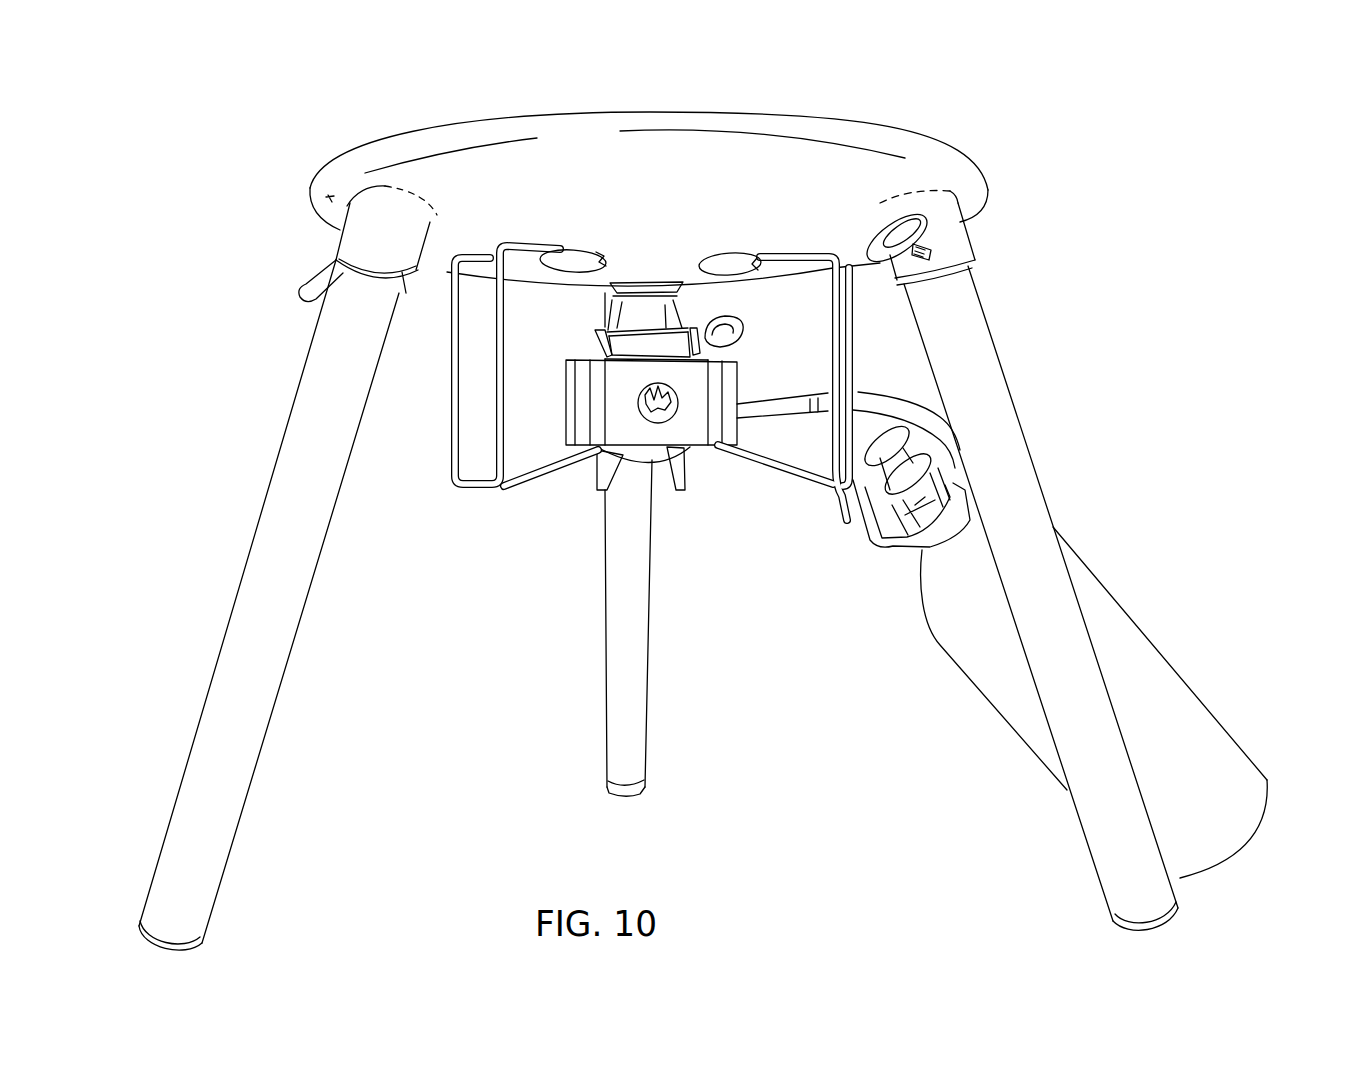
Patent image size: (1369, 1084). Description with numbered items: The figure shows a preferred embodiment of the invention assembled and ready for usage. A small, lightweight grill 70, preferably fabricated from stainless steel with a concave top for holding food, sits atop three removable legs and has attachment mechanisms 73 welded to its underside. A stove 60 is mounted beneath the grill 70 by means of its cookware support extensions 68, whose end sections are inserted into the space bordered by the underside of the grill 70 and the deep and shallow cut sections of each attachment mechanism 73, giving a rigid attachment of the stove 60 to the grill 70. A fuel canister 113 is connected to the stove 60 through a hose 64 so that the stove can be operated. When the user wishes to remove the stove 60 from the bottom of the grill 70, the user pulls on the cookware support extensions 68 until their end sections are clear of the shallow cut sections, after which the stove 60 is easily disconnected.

The stove 60 is at (573, 503).
The hose 64 is at (918, 395).
The cookware support extensions 68 is at (500, 413).
The grill 70 is at (512, 208).
The attachment mechanisms 73 is at (578, 250).
The fuel canister 113 is at (1115, 592).